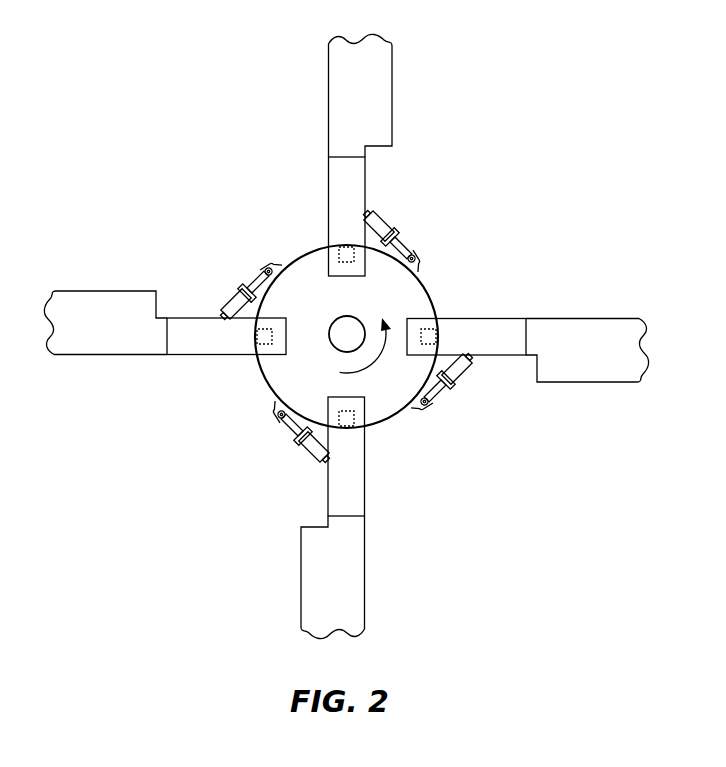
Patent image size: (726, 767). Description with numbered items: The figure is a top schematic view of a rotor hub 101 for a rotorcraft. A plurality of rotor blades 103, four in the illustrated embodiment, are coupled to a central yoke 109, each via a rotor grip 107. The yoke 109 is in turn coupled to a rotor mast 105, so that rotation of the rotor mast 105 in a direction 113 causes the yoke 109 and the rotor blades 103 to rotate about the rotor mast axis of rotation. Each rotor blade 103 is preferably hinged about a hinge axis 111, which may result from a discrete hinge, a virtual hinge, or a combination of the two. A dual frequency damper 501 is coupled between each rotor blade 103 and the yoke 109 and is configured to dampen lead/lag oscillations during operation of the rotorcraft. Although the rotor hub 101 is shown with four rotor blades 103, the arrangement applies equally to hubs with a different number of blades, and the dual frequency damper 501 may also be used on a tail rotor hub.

The rotor hub 101 is at (136, 196).
The rotor blade 103 is at (328, 117).
The rotor mast 105 is at (300, 263).
The rotor grip 107 is at (328, 205).
The yoke 109 is at (434, 318).
The hinge axis 111 is at (343, 250).
The direction 113 is at (378, 370).
The dual frequency damper 501 is at (408, 219).